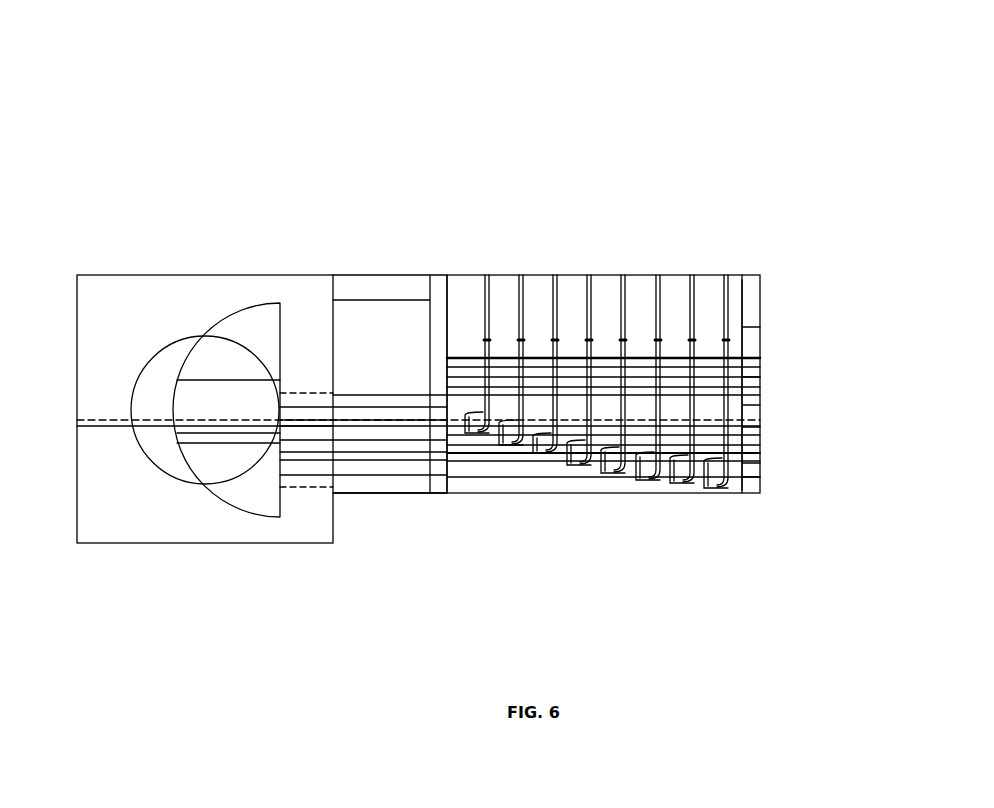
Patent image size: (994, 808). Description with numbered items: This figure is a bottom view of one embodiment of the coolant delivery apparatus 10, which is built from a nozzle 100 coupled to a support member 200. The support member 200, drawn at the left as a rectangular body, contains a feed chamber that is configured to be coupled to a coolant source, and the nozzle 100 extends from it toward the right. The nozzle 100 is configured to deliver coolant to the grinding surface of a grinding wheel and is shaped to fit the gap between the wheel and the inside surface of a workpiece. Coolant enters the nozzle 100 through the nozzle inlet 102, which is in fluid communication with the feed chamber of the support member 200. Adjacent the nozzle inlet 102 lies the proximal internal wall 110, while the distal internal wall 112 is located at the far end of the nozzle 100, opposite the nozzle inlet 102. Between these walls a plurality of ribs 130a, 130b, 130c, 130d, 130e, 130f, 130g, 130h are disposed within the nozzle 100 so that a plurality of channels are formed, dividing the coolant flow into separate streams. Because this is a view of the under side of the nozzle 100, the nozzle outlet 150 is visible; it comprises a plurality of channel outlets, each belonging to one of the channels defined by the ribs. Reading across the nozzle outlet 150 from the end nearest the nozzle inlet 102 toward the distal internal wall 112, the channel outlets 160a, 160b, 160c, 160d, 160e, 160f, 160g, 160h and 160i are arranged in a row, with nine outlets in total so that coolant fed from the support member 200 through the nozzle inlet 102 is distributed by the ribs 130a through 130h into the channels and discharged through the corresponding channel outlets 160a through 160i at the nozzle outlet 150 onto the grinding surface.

The coolant delivery apparatus 10 is at (247, 95).
The support member 200 is at (122, 230).
The nozzle outlet 150 is at (428, 183).
The nozzle 100 is at (440, 627).
The nozzle inlet 102 is at (347, 437).
The proximal internal wall 110 is at (447, 417).
The distal internal wall 112 is at (745, 388).
The channel outlet 160a is at (458, 290).
The channel outlet 160b is at (498, 290).
The channel outlet 160c is at (530, 290).
The channel outlet 160d is at (565, 290).
The channel outlet 160e is at (597, 290).
The channel outlet 160f is at (633, 290).
The channel outlet 160g is at (670, 290).
The channel outlet 160h is at (703, 290).
The channel outlet 160i is at (735, 290).
The rib 130a is at (470, 437).
The rib 130b is at (523, 453).
The rib 130c is at (540, 455).
The rib 130d is at (573, 467).
The rib 130e is at (608, 473).
The rib 130f is at (640, 485).
The rib 130g is at (673, 487).
The rib 130h is at (710, 490).